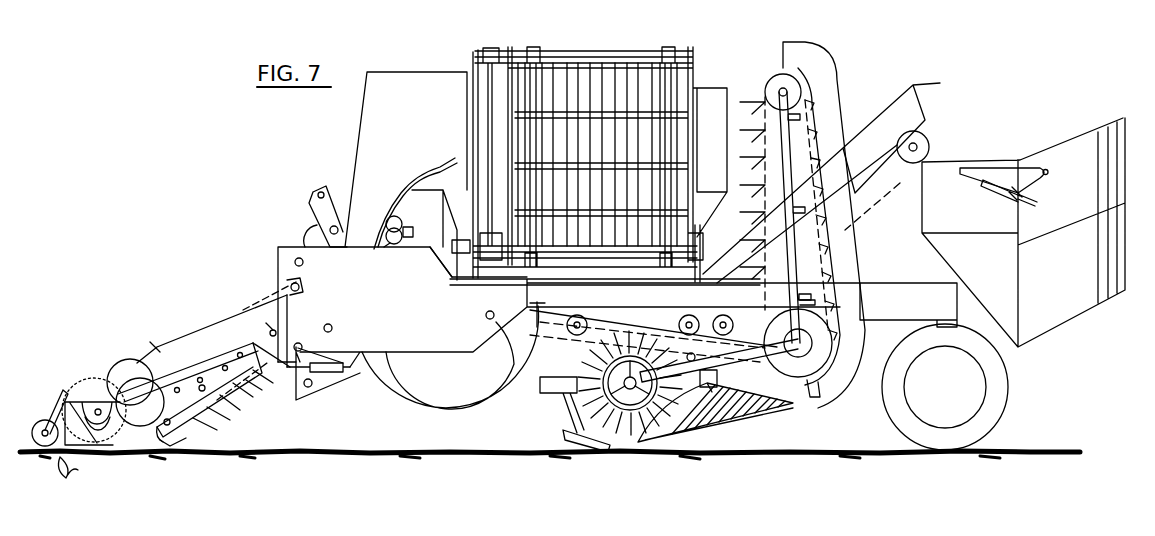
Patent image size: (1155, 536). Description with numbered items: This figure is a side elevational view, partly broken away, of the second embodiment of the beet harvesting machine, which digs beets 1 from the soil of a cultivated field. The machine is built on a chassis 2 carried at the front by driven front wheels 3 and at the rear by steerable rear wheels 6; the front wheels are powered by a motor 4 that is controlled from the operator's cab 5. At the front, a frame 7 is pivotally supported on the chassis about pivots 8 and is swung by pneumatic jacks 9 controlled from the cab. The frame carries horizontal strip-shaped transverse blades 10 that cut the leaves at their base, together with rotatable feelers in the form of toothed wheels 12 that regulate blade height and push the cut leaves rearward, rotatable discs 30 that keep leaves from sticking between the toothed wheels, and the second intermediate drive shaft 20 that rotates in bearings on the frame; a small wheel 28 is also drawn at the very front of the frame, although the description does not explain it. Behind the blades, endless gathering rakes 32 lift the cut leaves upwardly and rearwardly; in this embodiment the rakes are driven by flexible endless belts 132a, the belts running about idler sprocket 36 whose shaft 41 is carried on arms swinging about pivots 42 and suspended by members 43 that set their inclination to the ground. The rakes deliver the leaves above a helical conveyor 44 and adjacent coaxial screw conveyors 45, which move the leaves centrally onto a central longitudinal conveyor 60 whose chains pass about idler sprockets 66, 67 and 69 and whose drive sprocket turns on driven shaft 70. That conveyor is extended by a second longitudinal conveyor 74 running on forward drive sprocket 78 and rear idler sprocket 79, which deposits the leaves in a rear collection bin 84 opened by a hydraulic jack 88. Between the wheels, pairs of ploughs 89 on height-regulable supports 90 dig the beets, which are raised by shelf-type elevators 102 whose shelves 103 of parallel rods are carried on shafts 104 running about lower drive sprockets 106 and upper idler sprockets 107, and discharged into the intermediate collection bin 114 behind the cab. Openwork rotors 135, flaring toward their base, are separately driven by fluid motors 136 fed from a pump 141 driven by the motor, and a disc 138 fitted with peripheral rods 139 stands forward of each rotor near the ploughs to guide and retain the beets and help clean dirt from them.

The beets 1 is at (70, 452).
The chassis 2 is at (419, 348).
The front wheels 3 is at (386, 408).
The motor 4 is at (432, 172).
The operator's cab 5 is at (346, 160).
The rear wheels 6 is at (1008, 386).
The frame 7 is at (183, 330).
The pivots 8 is at (302, 283).
The pneumatic jacks 9 is at (332, 373).
The transverse blades 10 is at (140, 414).
The toothed wheels 12 is at (92, 376).
The second intermediate drive shaft 20 is at (243, 308).
The gauge wheel 28 is at (43, 420).
The rotatable discs 30 is at (127, 359).
The endless gathering rakes 32 is at (240, 390).
The idler sprocket 36 is at (160, 445).
The rotatable shaft 41 is at (218, 421).
The pivots 42 is at (266, 319).
The members 43 is at (203, 385).
The helical conveyor 44 is at (303, 339).
The screw conveyors 45 is at (332, 326).
The central longitudinal conveyor 60 is at (651, 316).
The idler sprocket 66 is at (577, 335).
The idler sprocket 67 is at (670, 315).
The idler sprocket 69 is at (486, 316).
The driven shaft 70 is at (308, 388).
The second longitudinal conveyor 74 is at (866, 215).
The forward drive sprocket 78 is at (720, 318).
The rear idler sprocket 79 is at (927, 138).
The rear collection bin 84 is at (1061, 155).
The hydraulic jack 88 is at (1000, 192).
The ploughs 89 is at (602, 455).
The supports 90 is at (567, 410).
The elevators 102 is at (837, 107).
The shelf 103 is at (765, 55).
The shafts 104 is at (765, 196).
The lower drive sprockets 106 is at (830, 397).
The upper idler sprockets 107 is at (766, 89).
The intermediate collection bin 114 is at (639, 52).
The flexible endless belts 132a is at (230, 400).
The openwork rotors 135 is at (764, 414).
The fluid motors 136 is at (708, 395).
The disc 138 is at (628, 420).
The rods 139 is at (765, 226).
The pump 141 is at (386, 228).